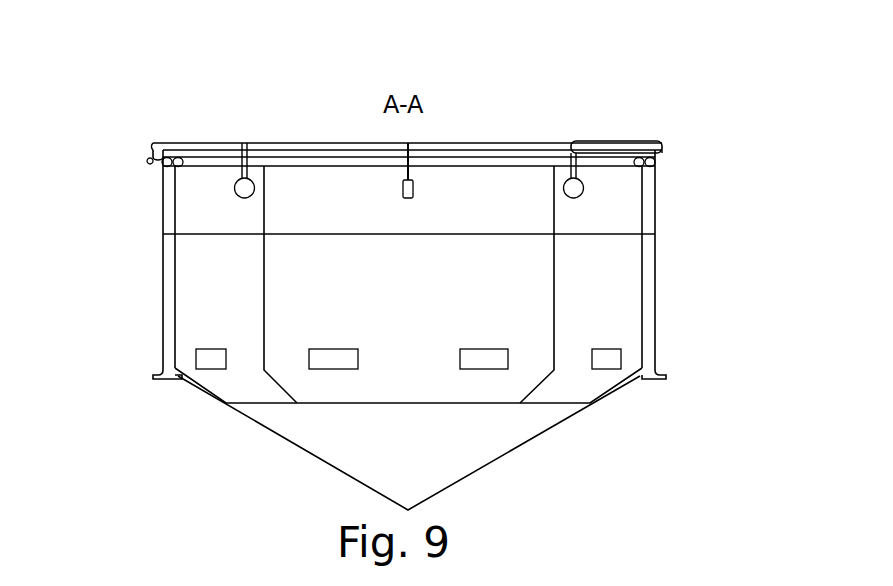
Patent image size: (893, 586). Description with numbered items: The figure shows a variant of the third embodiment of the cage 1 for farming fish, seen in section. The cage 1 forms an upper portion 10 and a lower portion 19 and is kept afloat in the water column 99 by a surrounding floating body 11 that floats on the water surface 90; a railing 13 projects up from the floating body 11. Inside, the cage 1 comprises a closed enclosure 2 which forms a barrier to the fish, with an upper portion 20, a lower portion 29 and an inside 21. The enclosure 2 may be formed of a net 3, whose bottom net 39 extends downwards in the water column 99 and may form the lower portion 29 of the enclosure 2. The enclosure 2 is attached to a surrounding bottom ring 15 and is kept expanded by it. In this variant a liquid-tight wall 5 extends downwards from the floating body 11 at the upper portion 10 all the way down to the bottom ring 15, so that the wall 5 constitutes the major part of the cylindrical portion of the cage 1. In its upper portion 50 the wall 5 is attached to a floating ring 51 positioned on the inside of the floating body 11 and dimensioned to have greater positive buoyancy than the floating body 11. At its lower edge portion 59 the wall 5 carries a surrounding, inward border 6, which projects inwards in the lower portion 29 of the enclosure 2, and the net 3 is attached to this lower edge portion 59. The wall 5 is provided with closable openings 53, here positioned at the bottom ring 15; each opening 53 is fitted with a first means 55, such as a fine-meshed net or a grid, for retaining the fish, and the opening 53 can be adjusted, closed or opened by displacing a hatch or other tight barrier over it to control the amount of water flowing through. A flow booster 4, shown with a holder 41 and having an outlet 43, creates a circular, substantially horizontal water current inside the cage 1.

The cage 1 is at (257, 96).
The closed enclosure 2 is at (243, 298).
The net 3 is at (593, 333).
The flow booster 4 is at (640, 142).
The liquid-tight wall 5 is at (618, 193).
The inward border 6 is at (217, 382).
The upper portion of the cage 10 is at (217, 197).
The surrounding floating body 11 is at (160, 160).
The railing 13 is at (660, 153).
The bottom ring 15 is at (153, 380).
The lower portion of the cage 19 is at (320, 435).
The upper portion of the enclosure 20 is at (225, 207).
The inside of the enclosure 21 is at (183, 272).
The lower portion of the enclosure 29 is at (355, 448).
The bottom net 39 is at (353, 482).
The holder 41 is at (593, 142).
The outlet 43 is at (583, 191).
The upper portion of the liquid-tight wall 50 is at (627, 167).
The floating ring 51 is at (655, 163).
The opening 53 is at (613, 362).
The first means for retaining the fish 55 is at (602, 358).
The lower edge portion 59 is at (657, 377).
The water surface 90 is at (150, 158).
The water column 99 is at (550, 502).